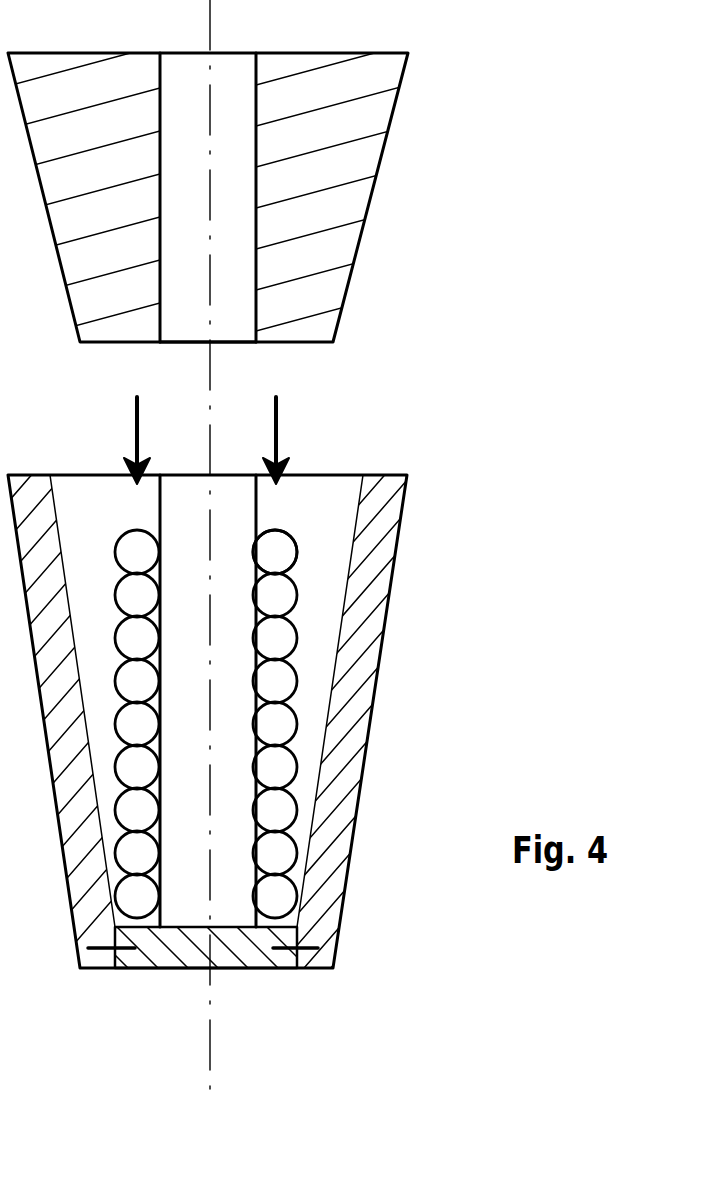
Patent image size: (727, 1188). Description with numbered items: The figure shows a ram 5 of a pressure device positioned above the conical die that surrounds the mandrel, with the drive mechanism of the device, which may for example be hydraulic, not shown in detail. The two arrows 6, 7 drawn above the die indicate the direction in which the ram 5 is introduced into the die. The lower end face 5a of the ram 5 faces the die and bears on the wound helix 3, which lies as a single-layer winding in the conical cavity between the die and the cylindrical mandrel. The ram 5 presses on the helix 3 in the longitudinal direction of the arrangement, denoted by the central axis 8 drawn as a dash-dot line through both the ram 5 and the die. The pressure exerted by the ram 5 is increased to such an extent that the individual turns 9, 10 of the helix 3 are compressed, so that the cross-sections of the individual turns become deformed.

The helix 3 is at (303, 522).
The ram 5 is at (384, 158).
The end face of the punch 5a is at (235, 335).
The arrow 6 is at (122, 421).
The arrow 7 is at (290, 422).
The axis 8 is at (222, 1048).
The turn of the helix 9 is at (298, 538).
The turn of the helix 10 is at (297, 577).